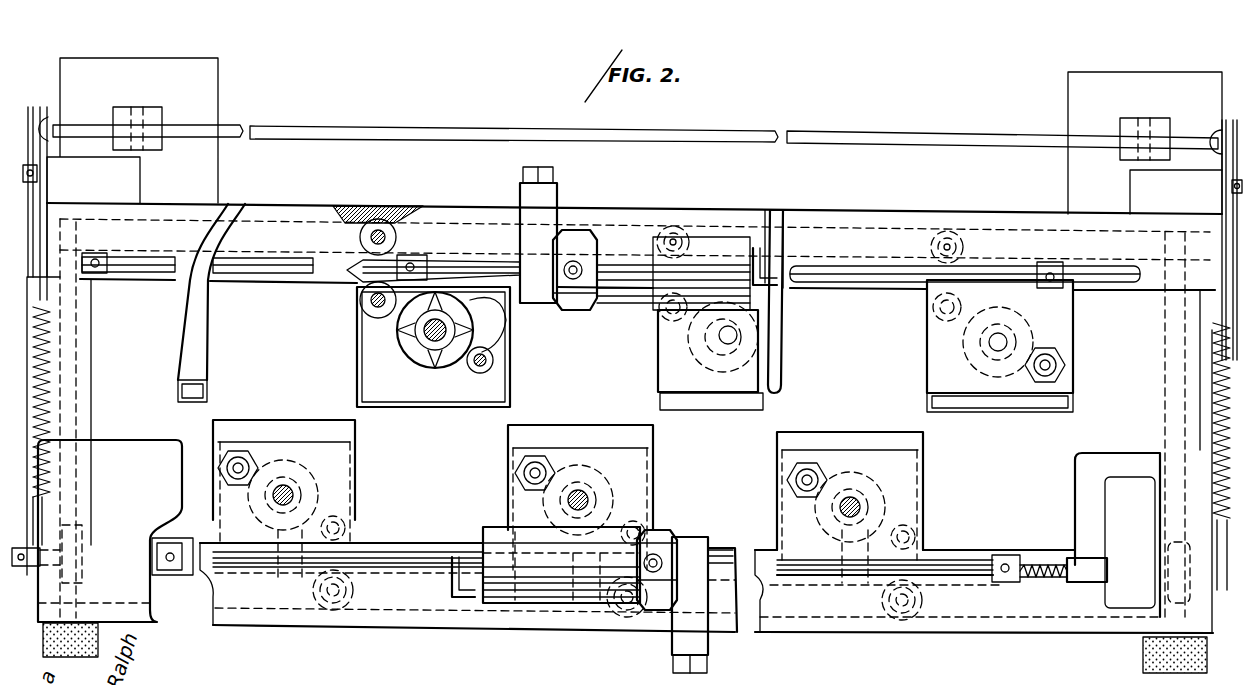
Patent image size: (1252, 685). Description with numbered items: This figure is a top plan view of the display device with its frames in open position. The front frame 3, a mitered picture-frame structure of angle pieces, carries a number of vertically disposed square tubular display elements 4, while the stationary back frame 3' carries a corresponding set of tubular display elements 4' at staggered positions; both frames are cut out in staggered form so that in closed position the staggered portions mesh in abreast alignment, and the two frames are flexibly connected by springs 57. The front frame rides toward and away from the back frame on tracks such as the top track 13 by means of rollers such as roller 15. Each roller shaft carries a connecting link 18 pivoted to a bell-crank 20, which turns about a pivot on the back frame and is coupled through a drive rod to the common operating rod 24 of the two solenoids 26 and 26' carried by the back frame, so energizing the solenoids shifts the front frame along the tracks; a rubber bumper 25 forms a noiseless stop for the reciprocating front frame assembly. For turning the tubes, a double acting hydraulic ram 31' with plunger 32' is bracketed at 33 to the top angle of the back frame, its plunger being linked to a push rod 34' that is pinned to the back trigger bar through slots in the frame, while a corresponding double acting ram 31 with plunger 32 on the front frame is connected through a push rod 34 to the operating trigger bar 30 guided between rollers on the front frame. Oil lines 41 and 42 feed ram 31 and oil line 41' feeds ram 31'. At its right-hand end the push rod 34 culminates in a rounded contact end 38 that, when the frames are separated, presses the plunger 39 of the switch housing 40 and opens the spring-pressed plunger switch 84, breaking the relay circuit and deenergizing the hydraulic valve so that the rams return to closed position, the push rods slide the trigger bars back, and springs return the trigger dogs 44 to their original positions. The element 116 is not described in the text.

The front frame 3 is at (320, 500).
The back frame 3' is at (565, 289).
The tubular display elements 4 is at (568, 481).
The tubular display elements 4' is at (715, 335).
The top track 13 is at (88, 374).
The roller 15 is at (1163, 547).
The connecting link 18 is at (50, 392).
The bell-crank 20 is at (1215, 222).
The common operating rod 24 is at (527, 128).
The rubber bumper 25 is at (85, 638).
The solenoid 26 is at (1110, 143).
The solenoid 26' is at (155, 130).
The operating trigger bar 30 is at (952, 557).
The double acting ram 31 is at (561, 595).
The double acting hydraulic ram 31' is at (673, 238).
The plunger 32 is at (709, 582).
The plunger 32' is at (433, 254).
The bracket 33 is at (528, 298).
The push rod 34 is at (885, 619).
The push rod 34' is at (197, 286).
The rounded contact end 38 is at (1024, 565).
The plunger 39 is at (1058, 567).
The switch housing 40 is at (1075, 580).
The oil line 41 is at (665, 554).
The oil line 41' is at (584, 290).
The oil line 42 is at (457, 550).
The trigger dog 44 is at (680, 640).
The springs 57 is at (55, 342).
The spring-pressed plunger switch 84 is at (1117, 478).
The slot 116 is at (78, 532).